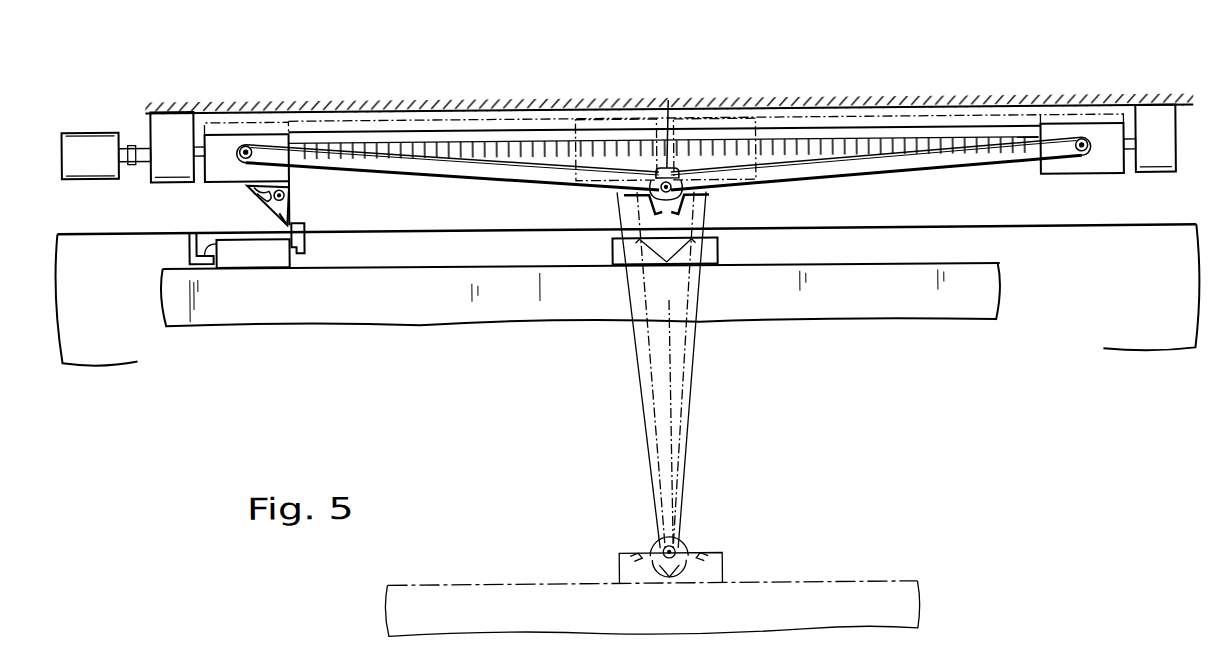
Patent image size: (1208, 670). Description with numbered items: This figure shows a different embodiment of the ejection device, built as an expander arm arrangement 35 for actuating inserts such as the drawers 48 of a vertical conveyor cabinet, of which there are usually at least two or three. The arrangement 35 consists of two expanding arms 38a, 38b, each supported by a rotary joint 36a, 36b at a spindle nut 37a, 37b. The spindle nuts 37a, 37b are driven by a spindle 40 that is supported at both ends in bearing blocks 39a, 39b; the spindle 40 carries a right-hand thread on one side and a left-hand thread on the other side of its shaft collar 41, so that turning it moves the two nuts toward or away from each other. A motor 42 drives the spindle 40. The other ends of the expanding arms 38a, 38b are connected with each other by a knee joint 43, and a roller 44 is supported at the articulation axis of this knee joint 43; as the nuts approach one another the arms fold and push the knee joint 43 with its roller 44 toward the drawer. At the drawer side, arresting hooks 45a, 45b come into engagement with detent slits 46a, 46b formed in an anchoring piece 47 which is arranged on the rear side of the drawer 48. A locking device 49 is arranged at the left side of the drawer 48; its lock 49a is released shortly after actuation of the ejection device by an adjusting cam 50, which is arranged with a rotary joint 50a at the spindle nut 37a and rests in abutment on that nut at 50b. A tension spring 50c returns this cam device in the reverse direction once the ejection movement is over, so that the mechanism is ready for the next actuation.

The expander arm arrangement 35 is at (488, 208).
The rotary joint 36a is at (251, 144).
The rotary joint 36b is at (1079, 143).
The spindle nut 37a is at (222, 139).
The spindle nut 37b is at (1108, 131).
The expanding arm 38a is at (430, 165).
The expanding arm 38b is at (880, 162).
The bearing block 39a is at (172, 125).
The bearing block 39b is at (1157, 128).
The spindle 40 is at (525, 139).
The shaft collar 41 is at (670, 100).
The motor 42 is at (85, 145).
The knee joint 43 is at (682, 172).
The roller 44 is at (661, 183).
The arresting hook 45a is at (645, 199).
The arresting hook 45b is at (695, 199).
The detent slit 46a is at (648, 247).
The detent slit 46b is at (678, 247).
The anchoring piece 47 is at (612, 245).
The drawer 48 is at (992, 279).
The locking device 49 is at (262, 253).
The lock 49a is at (306, 247).
The adjusting cam 50 is at (287, 205).
The rotary joint 50a is at (288, 192).
The abutment 50b is at (256, 183).
The tension spring 50c is at (283, 216).